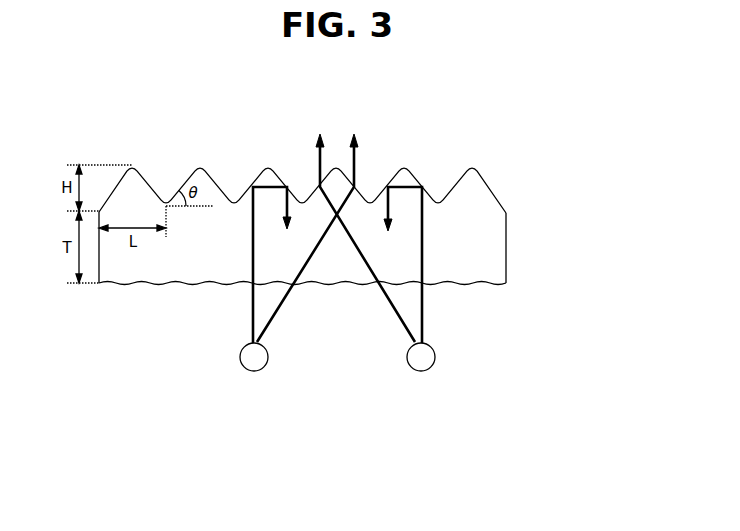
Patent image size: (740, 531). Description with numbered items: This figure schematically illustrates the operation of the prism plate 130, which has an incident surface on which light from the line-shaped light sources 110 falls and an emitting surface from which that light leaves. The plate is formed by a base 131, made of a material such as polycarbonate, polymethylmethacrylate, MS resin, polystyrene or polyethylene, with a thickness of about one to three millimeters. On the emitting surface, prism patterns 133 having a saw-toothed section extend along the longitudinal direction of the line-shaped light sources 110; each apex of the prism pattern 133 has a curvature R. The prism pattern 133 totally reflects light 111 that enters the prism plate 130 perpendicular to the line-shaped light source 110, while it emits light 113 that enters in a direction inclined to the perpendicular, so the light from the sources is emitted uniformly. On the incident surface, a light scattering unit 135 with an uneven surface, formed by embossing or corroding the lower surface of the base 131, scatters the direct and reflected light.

The line-shaped light source 110 is at (254, 363).
The light 111 is at (250, 263).
The light 113 is at (365, 263).
The prism plate 130 is at (359, 254).
The base 131 is at (506, 238).
The prism pattern 133 is at (495, 188).
The light scattering unit 135 is at (147, 285).
The curvature of the apex R is at (475, 163).